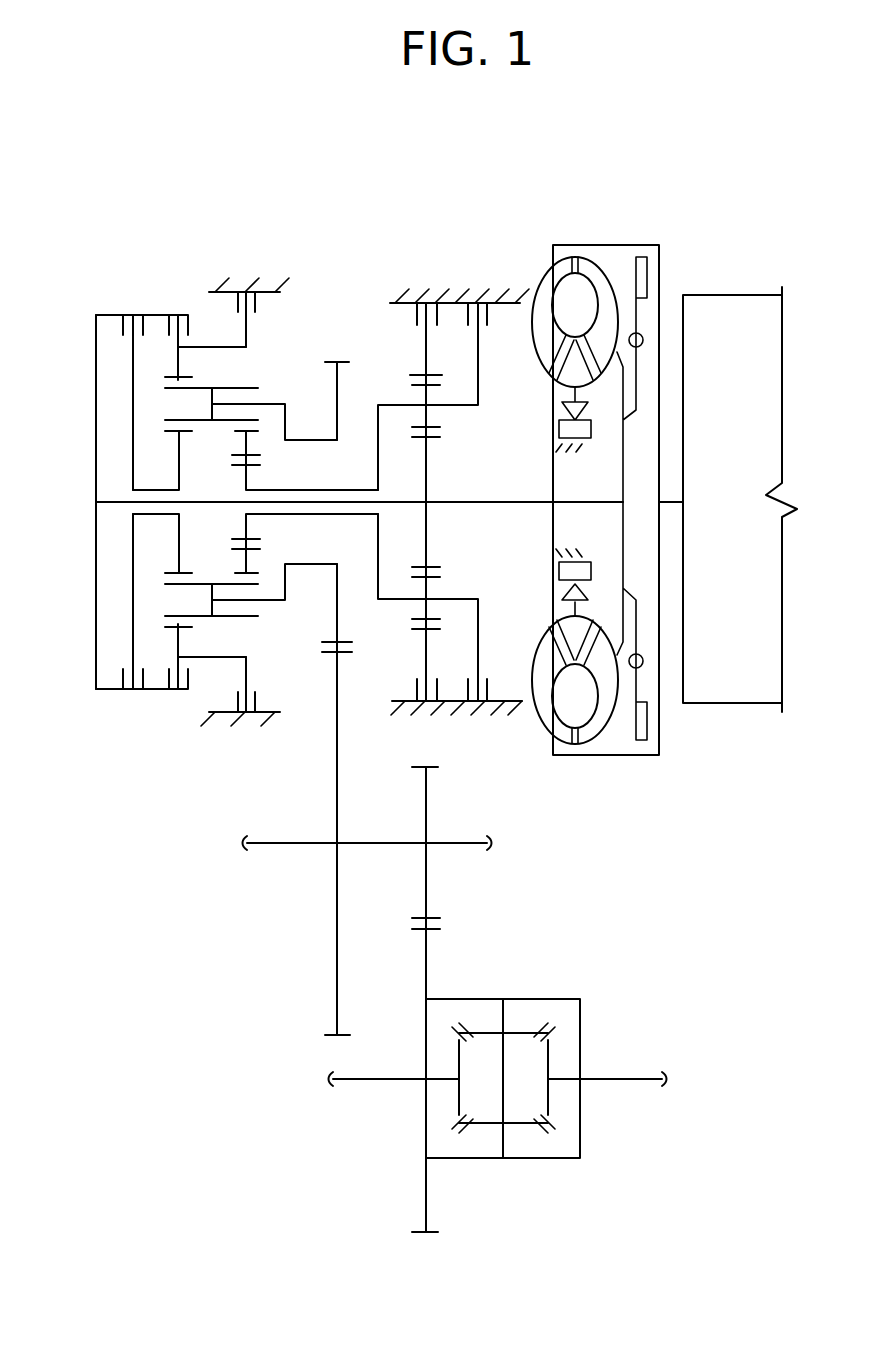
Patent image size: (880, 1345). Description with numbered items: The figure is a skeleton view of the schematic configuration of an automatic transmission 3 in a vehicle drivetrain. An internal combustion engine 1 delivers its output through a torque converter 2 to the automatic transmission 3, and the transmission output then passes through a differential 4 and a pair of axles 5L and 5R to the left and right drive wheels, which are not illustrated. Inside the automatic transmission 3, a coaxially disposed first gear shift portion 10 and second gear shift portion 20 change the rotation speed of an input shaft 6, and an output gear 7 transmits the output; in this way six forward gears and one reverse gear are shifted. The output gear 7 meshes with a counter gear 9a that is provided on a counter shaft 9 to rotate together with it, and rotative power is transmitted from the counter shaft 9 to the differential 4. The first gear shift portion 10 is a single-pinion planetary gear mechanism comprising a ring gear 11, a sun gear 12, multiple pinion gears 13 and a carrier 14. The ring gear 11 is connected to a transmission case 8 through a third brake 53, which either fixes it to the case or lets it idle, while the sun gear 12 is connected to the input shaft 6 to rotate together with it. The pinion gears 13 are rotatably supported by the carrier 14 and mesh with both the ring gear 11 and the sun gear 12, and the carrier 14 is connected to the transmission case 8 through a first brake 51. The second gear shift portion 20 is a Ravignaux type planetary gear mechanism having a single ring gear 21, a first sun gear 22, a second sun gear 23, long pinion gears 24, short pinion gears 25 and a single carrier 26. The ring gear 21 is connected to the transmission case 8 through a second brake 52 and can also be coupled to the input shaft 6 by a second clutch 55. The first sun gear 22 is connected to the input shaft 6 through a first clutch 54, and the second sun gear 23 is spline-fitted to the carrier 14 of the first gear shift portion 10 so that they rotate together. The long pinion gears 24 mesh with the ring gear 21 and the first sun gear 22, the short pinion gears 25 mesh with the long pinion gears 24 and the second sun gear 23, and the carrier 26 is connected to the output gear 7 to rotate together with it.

The engine 1 is at (757, 355).
The torque converter 2 is at (595, 240).
The automatic transmission 3 is at (328, 252).
The differential 4 is at (509, 1170).
The axle 5L is at (378, 1082).
The axle 5R is at (622, 1082).
The input shaft 6 is at (492, 504).
The output gear 7 is at (338, 345).
The transmission case 8 is at (222, 288).
The counter shaft 9 is at (292, 840).
The counter gear 9a is at (335, 916).
The first gear shift portion 10 is at (430, 275).
The ring gear 11 is at (422, 360).
The sun gear 12 is at (430, 470).
The pinion gears 13 is at (420, 393).
The carrier 14 is at (458, 408).
The second gear shift portion 20 is at (251, 256).
The ring gear 21 is at (180, 357).
The first sun gear 22 is at (177, 473).
The second sun gear 23 is at (243, 477).
The long pinion gears 24 is at (250, 386).
The short pinion gears 25 is at (258, 448).
The carrier 26 is at (270, 402).
The first brake 51 is at (491, 312).
The second brake 52 is at (268, 302).
The third brake 53 is at (398, 314).
The first clutch 54 is at (128, 310).
The second clutch 55 is at (175, 310).